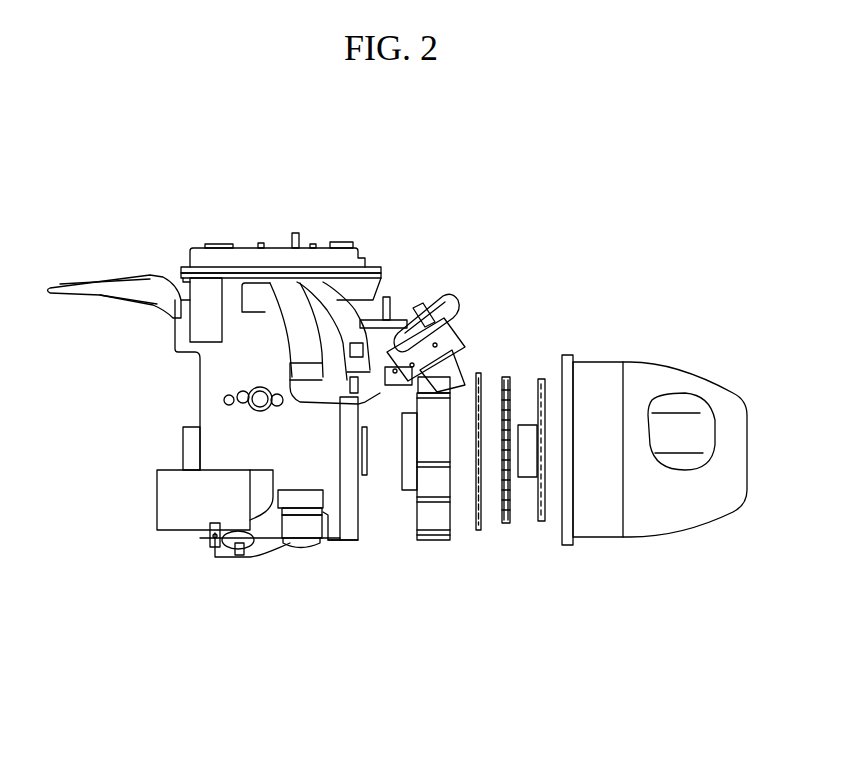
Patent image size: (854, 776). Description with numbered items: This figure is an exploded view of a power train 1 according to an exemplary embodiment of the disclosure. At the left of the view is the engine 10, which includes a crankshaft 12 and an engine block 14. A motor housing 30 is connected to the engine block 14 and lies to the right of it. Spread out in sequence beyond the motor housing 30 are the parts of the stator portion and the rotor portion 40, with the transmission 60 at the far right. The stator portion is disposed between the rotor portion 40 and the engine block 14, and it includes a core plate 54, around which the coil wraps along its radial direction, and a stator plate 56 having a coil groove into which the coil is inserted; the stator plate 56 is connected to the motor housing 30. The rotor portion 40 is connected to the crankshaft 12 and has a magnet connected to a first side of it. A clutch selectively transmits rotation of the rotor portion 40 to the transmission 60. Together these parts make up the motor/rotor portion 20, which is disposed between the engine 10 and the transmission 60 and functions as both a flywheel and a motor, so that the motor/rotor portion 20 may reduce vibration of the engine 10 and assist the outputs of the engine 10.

The power train 1 is at (187, 562).
The engine 10 is at (257, 402).
The crankshaft 12 is at (368, 450).
The engine block 14 is at (198, 393).
The motor/rotor portion 20 is at (574, 543).
The motor housing 30 is at (433, 540).
The rotor portion 40 is at (540, 537).
The core plate 54 is at (505, 523).
The stator plate 56 is at (478, 530).
The transmission 60 is at (607, 540).